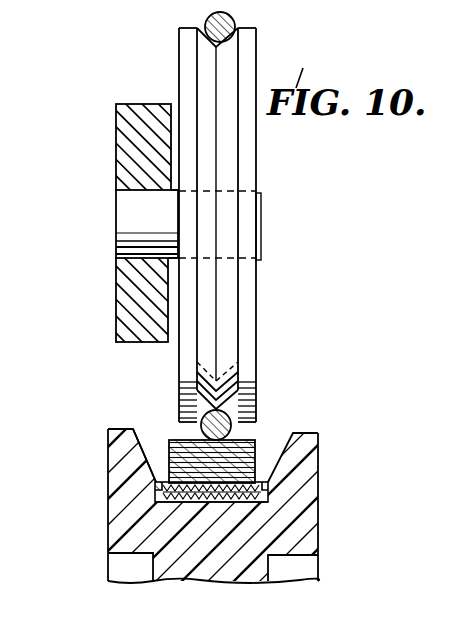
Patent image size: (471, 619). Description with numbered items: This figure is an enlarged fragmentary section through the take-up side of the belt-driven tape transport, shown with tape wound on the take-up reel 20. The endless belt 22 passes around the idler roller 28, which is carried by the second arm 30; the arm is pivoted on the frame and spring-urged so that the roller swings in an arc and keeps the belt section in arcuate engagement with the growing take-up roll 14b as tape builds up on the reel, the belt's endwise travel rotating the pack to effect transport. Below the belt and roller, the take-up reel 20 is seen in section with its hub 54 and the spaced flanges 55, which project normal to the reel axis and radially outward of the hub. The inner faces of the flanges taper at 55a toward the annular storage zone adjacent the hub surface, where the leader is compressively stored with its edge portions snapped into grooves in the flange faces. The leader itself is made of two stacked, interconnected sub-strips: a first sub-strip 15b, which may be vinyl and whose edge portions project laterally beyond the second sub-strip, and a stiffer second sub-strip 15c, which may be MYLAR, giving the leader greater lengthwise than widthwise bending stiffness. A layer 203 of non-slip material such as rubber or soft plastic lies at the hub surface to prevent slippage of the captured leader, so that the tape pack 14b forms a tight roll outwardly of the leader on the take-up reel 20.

The take-up reel 20 is at (93, 538).
The endless belt 22 is at (231, 37).
The idler roller 28 is at (248, 332).
The second arm 30 is at (125, 298).
The hub 54 is at (257, 573).
The flanges 55 is at (125, 458).
The tapered faces 55a is at (157, 480).
The take-up roll 14b is at (262, 485).
The first sub-strip 15b is at (262, 495).
The second sub-strip 15c is at (165, 468).
The layer of non-slip material 203 is at (252, 506).